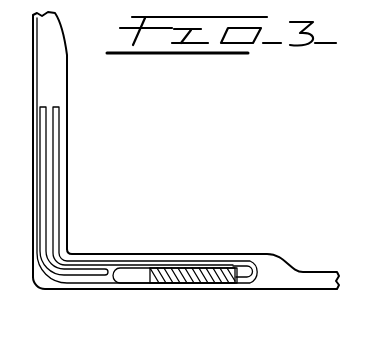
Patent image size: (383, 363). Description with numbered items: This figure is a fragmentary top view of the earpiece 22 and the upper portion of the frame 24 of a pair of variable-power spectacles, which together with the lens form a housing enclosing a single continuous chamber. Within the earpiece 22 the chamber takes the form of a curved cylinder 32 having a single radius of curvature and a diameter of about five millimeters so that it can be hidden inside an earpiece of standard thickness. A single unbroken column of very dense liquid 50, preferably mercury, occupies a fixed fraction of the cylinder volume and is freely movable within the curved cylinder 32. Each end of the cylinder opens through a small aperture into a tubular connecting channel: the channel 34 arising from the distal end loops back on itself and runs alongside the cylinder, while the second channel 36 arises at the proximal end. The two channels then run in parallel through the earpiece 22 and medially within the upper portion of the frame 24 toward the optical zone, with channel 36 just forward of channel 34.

The earpiece 22 is at (283, 272).
The frame 24 is at (53, 71).
The curved cylinder 32 is at (138, 277).
The channel 34 is at (93, 262).
The second channel 36 is at (77, 277).
The mercury column 50 is at (205, 278).